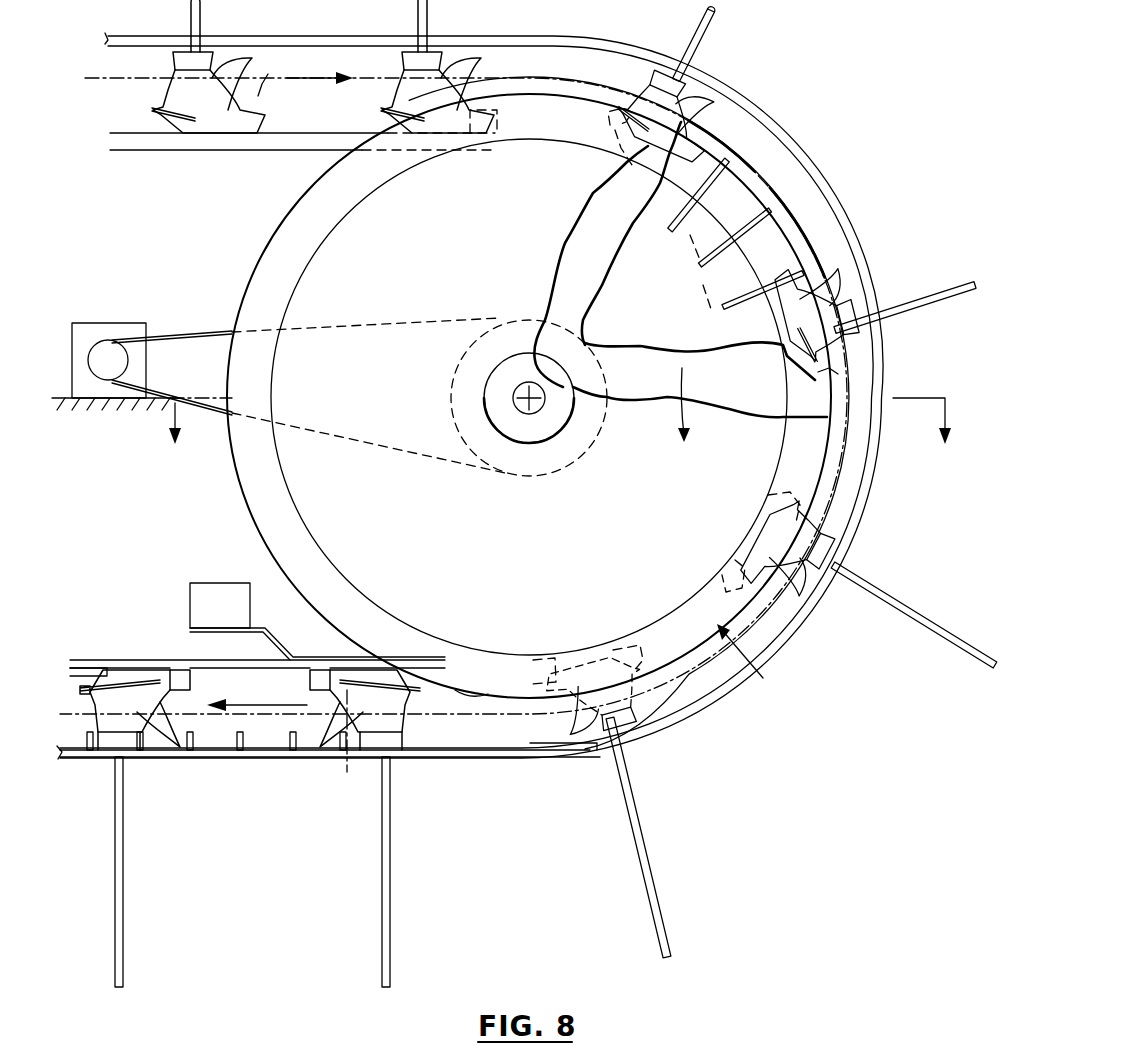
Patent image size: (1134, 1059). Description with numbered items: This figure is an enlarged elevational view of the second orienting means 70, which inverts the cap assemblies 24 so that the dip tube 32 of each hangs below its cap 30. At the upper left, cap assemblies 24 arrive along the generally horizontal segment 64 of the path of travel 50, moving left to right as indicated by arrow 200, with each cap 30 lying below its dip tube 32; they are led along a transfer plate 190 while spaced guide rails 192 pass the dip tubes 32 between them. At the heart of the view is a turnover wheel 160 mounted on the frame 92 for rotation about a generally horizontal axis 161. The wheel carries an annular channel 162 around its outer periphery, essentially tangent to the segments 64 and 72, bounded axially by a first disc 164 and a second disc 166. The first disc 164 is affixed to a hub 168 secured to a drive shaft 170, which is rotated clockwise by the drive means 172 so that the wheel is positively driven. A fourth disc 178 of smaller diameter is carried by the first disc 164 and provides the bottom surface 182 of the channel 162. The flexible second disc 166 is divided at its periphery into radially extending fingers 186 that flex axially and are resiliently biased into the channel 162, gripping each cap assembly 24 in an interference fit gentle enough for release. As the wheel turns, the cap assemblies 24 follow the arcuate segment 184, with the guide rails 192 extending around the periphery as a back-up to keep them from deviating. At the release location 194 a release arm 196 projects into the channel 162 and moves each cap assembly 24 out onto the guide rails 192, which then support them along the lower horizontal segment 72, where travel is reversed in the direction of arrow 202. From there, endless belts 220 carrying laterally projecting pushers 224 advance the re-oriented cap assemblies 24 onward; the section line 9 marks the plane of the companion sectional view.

The section line 9- 9 is at (560, 435).
The cap assembly 24 is at (150, 97).
The cap 30 is at (656, 95).
The dip tube 32 is at (713, 28).
The path of travel 50 is at (116, 78).
The horizontal segment of the path of travel 64 is at (266, 86).
The second orienting means 70 is at (768, 106).
The horizontal segment of the path of travel 72 is at (395, 745).
The frame 92 is at (212, 584).
The turnover wheel 160 is at (758, 659).
The horizontal axis 161 is at (516, 396).
The annular channel 162 is at (822, 384).
The first disc 164 is at (538, 96).
The second disc 166 is at (666, 352).
The hub 168 is at (352, 214).
The drive shaft 170 is at (512, 406).
The drive means 172 is at (100, 322).
The fourth disc 178 is at (605, 228).
The bottom surface 182 is at (630, 156).
The arcuate segment of the path of travel 184 is at (768, 610).
The fingers 186 is at (765, 245).
The transfer plate 190 is at (263, 145).
The guide rails 192 is at (336, 22).
The release location 194 is at (471, 692).
The release arm 196 is at (266, 640).
The arrow 200 is at (312, 76).
The arrow 202 is at (258, 689).
The endless belts 220 is at (262, 746).
The pushers 224 is at (232, 748).